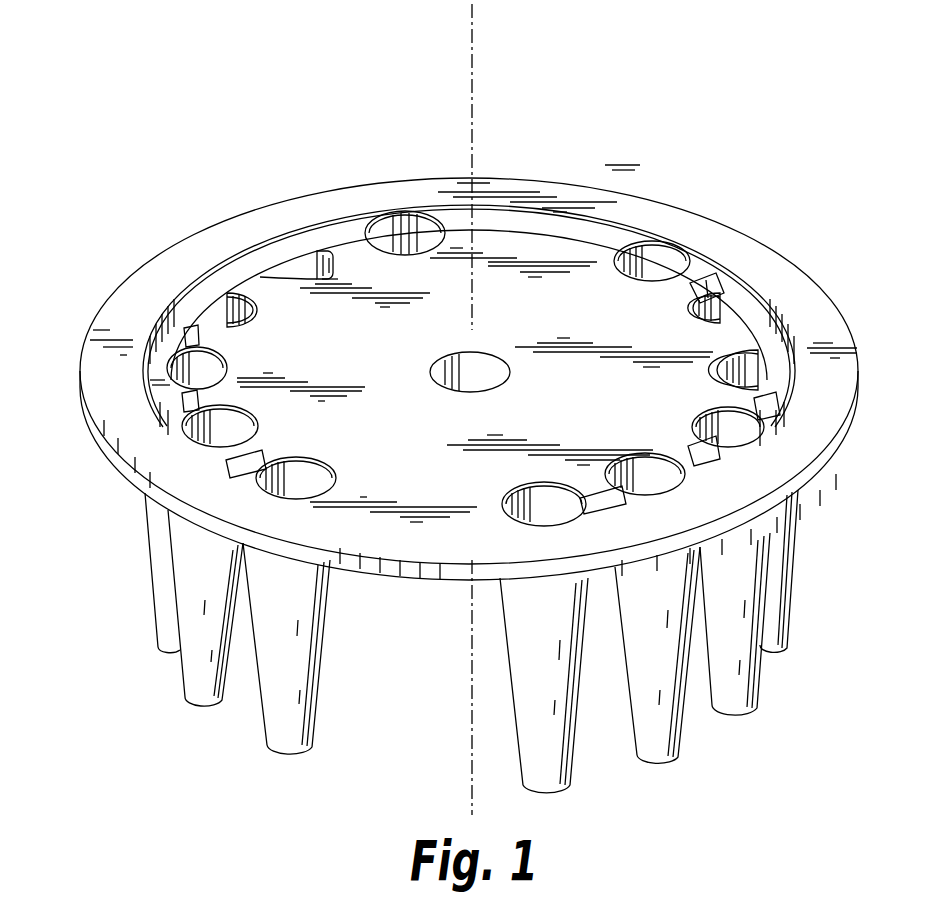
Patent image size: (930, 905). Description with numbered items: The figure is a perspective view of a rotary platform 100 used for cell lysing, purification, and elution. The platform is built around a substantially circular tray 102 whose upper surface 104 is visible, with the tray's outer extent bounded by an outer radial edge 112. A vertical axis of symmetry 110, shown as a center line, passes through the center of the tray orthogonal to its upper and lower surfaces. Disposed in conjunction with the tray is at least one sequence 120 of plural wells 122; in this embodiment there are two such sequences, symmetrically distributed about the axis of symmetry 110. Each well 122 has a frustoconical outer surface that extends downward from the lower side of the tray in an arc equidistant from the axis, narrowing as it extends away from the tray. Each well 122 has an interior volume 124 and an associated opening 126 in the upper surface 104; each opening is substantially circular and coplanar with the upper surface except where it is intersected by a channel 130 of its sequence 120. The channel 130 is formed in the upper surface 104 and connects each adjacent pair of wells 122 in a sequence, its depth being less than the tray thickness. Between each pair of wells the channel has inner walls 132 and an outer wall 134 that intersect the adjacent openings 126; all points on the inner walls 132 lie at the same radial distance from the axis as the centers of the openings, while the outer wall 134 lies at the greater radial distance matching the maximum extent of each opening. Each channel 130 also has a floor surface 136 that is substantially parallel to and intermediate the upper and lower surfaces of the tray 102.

The rotary platform 100 is at (473, 412).
The tray 102 is at (505, 346).
The upper surface 104 is at (507, 215).
The axis of symmetry 110 is at (474, 80).
The outer radial edge 112 is at (838, 456).
The sequence 120 is at (487, 655).
The well 122 is at (156, 583).
The interior volume 124 is at (200, 416).
The opening 126 is at (434, 212).
The channel 130 is at (196, 277).
The inner walls 132 is at (232, 476).
The outer wall 134 is at (275, 258).
The floor surface 136 is at (165, 372).